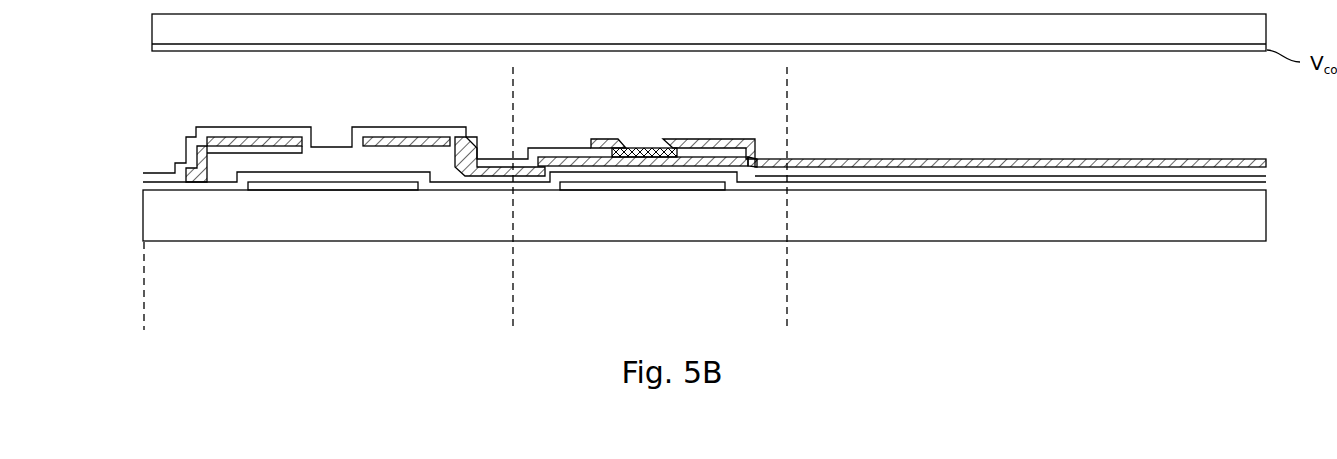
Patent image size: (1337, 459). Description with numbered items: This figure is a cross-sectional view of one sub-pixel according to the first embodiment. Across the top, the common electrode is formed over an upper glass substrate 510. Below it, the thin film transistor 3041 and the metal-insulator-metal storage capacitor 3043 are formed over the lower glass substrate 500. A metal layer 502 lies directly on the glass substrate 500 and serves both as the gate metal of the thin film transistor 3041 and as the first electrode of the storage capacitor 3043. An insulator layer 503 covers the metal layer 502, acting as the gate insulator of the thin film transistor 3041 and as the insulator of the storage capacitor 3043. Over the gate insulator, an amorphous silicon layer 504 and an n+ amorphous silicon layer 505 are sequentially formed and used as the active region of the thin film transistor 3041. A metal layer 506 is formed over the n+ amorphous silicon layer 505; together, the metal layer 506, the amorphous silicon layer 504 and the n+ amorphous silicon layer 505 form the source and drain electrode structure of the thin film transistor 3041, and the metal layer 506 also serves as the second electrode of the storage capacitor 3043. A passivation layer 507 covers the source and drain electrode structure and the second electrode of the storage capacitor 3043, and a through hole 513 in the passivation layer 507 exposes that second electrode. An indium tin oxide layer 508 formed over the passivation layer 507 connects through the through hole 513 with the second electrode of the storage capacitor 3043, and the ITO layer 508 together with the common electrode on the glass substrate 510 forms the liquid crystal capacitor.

The glass substrate 500 is at (1267, 214).
The metal layer 502 is at (325, 188).
The insulator layer 503 is at (1267, 183).
The amorphous silicon layer 504 is at (222, 172).
The n+ amorphous silicon layer 505 is at (448, 147).
The metal layer 506 is at (448, 140).
The passivation layer 507 is at (150, 175).
The ITO layer 508 is at (1267, 161).
The glass substrate 510 is at (1267, 27).
The through hole 513 is at (636, 128).
The thin film transistor 3041 is at (513, 309).
The storage capacitor 3043 is at (787, 309).